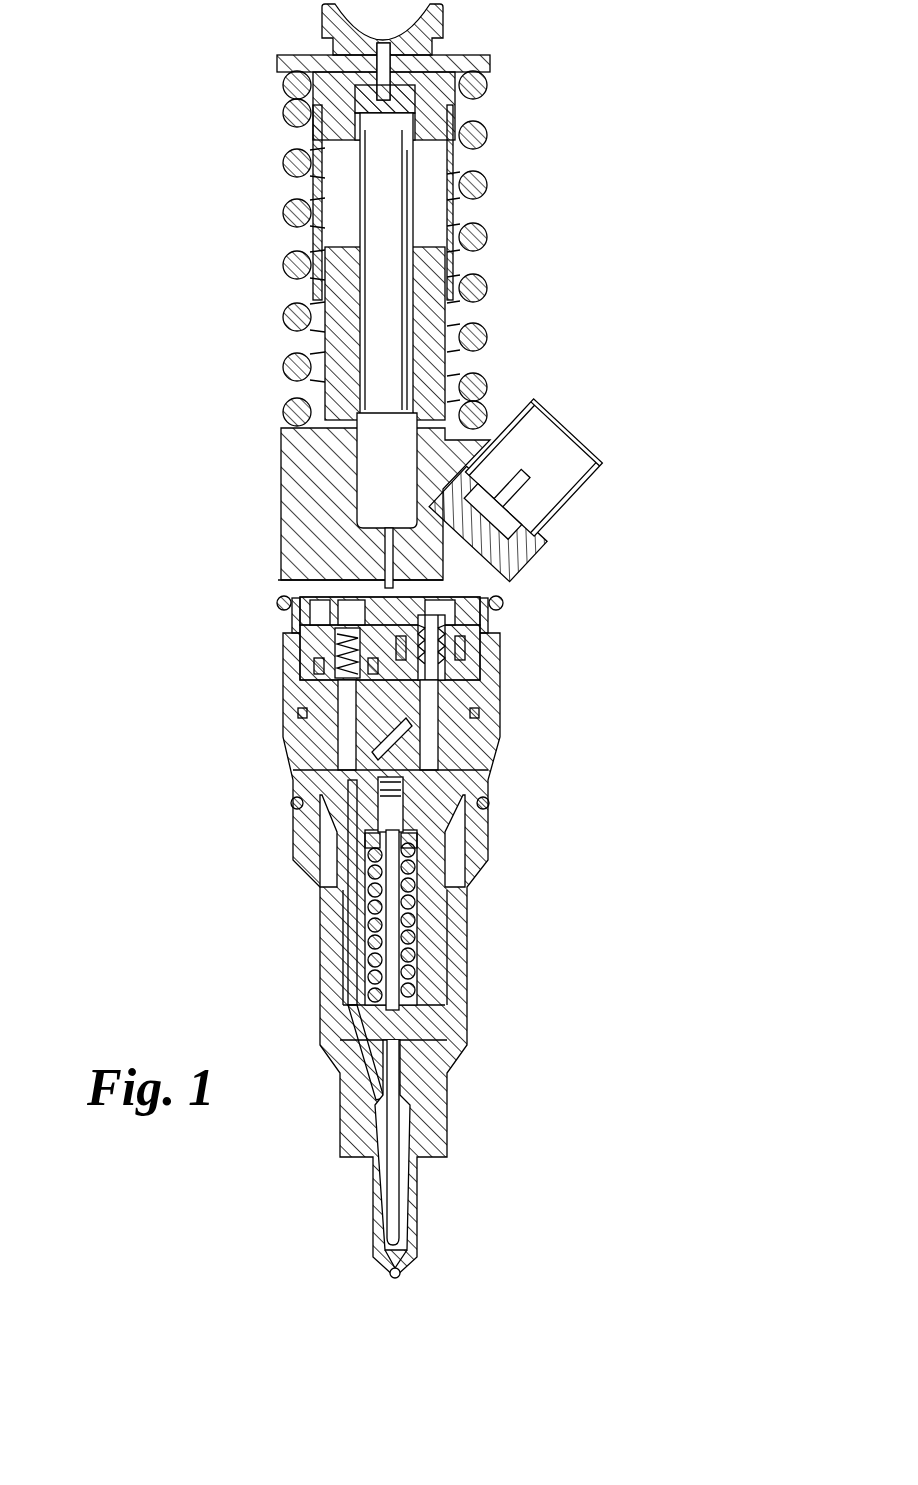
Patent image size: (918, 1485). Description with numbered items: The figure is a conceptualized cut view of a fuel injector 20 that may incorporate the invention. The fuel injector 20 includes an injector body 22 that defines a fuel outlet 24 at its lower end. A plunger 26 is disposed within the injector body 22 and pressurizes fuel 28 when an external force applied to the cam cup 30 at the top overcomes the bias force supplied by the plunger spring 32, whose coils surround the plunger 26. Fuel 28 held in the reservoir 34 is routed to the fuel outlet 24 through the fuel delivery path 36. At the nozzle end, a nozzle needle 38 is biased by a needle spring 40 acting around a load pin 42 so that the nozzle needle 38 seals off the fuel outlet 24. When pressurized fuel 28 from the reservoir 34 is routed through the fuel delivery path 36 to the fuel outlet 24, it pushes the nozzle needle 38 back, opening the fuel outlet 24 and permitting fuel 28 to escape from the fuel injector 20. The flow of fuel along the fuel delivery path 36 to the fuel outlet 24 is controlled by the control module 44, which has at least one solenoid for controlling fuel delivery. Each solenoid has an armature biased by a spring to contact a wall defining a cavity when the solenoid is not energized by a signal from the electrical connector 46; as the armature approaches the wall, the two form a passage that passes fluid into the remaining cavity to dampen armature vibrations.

The fuel injector 20 is at (608, 104).
The injector body 22 is at (281, 508).
The fuel outlet 24 is at (392, 1290).
The plunger 26 is at (413, 192).
The fuel 28 is at (403, 500).
The cam cup 30 is at (443, 14).
The plunger spring 32 is at (487, 283).
The reservoir 34 is at (357, 480).
The fuel delivery path 36 is at (385, 555).
The nozzle needle 38 is at (404, 1222).
The needle spring 40 is at (435, 955).
The load pin 42 is at (410, 918).
The control module 44 is at (530, 668).
The electrical connector 46 is at (560, 520).